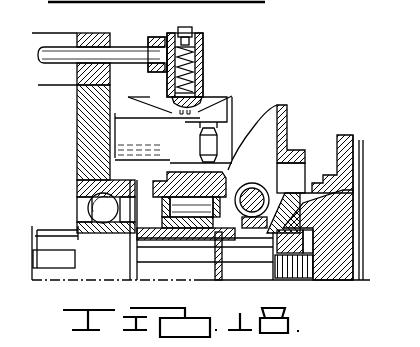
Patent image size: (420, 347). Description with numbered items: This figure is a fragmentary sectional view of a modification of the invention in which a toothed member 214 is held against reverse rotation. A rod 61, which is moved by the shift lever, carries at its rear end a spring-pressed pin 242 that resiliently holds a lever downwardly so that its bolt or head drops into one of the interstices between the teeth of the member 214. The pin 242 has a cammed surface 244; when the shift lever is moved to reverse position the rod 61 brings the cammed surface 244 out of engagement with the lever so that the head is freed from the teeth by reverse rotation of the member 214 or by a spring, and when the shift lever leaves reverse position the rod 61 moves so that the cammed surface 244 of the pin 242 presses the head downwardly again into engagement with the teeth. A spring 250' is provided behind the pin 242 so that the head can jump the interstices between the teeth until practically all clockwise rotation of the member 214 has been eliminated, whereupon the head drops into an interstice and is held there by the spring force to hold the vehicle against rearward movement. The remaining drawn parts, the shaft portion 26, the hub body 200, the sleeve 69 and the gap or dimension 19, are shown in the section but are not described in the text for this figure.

The rod 61 is at (60, 53).
The dimension / gap 19 is at (232, 65).
The spring 250' is at (221, 70).
The spring-pressed pin 242 is at (203, 90).
The member 214 is at (277, 108).
The cammed surface 244 is at (85, 113).
The shaft end 26 is at (150, 268).
The hub body 200 is at (219, 263).
The sleeve 69 is at (262, 268).